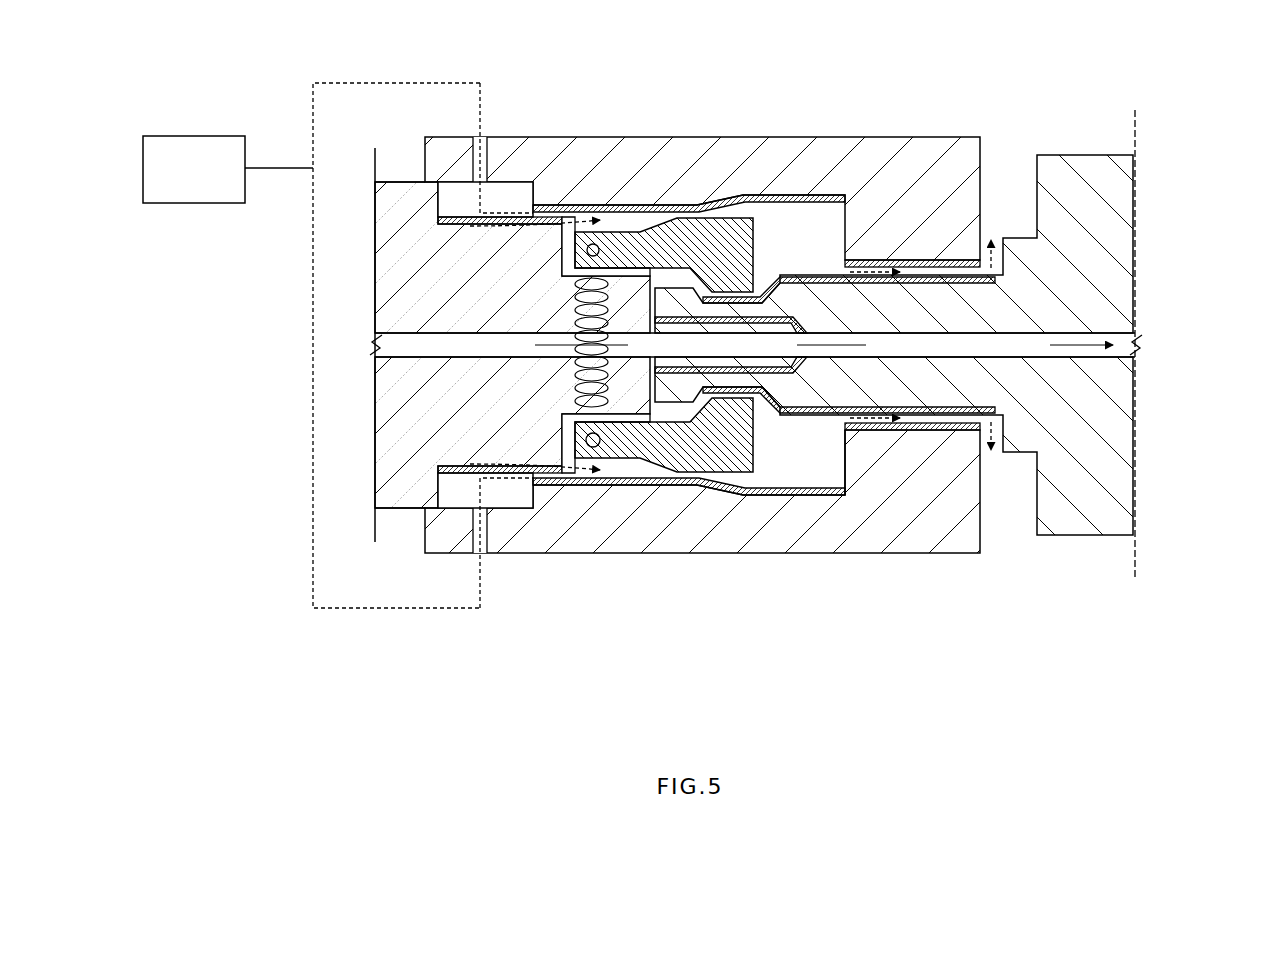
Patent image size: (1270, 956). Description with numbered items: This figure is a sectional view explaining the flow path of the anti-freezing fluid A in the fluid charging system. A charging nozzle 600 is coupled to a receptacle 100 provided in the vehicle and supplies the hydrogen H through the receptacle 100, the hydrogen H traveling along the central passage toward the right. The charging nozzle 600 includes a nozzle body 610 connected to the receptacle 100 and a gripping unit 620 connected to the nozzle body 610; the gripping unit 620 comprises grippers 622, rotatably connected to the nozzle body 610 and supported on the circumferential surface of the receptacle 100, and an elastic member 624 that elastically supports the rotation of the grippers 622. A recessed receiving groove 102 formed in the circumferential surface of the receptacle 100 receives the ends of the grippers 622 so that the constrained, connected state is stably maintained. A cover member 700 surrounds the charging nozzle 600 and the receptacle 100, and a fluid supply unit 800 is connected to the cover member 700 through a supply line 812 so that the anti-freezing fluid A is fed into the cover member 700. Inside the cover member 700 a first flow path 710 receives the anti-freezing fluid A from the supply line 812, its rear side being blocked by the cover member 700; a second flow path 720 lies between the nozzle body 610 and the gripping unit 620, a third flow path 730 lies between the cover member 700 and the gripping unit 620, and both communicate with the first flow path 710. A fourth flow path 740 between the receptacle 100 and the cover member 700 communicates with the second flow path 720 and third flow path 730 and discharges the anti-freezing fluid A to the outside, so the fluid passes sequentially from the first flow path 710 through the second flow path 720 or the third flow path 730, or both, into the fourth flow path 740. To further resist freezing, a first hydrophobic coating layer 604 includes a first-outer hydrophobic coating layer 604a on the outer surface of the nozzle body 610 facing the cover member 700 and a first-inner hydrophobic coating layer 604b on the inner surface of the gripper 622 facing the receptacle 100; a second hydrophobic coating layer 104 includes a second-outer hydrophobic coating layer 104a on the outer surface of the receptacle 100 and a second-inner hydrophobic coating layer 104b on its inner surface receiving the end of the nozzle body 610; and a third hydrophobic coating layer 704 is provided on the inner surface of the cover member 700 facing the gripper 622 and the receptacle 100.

The receptacle 100 is at (920, 387).
The receiving groove 102 is at (777, 352).
The second hydrophobic coating layer 104 is at (957, 345).
The second-outer hydrophobic coating layer 104a is at (790, 285).
The second-inner hydrophobic coating layer 104b is at (800, 322).
The charging nozzle 600 is at (370, 452).
The first hydrophobic coating layer 604 is at (433, 258).
The first-outer hydrophobic coating layer 604a is at (438, 215).
The first-inner hydrophobic coating layer 604b is at (700, 297).
The nozzle body 610 is at (518, 452).
The gripping unit 620 is at (641, 445).
The grippers 622 is at (614, 412).
The elastic member 624 is at (600, 447).
The cover member 700 is at (957, 540).
The third hydrophobic coating layer 704 is at (836, 498).
The first flow path 710 is at (505, 198).
The second flow path 720 is at (575, 216).
The third flow path 730 is at (736, 192).
The fourth flow path 740 is at (918, 260).
The fluid supply unit 800 is at (193, 136).
The supply line 812 is at (400, 610).
The anti-freezing fluid A is at (798, 240).
The hydrogen H is at (1095, 352).